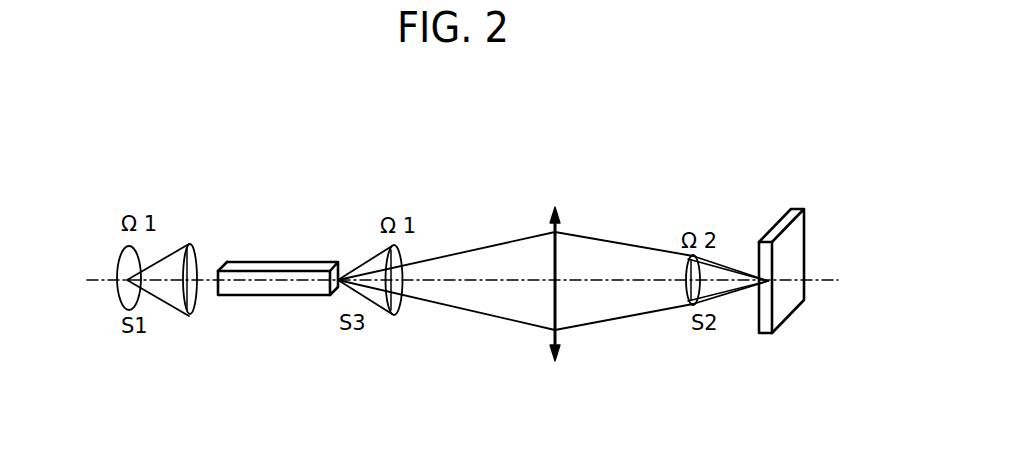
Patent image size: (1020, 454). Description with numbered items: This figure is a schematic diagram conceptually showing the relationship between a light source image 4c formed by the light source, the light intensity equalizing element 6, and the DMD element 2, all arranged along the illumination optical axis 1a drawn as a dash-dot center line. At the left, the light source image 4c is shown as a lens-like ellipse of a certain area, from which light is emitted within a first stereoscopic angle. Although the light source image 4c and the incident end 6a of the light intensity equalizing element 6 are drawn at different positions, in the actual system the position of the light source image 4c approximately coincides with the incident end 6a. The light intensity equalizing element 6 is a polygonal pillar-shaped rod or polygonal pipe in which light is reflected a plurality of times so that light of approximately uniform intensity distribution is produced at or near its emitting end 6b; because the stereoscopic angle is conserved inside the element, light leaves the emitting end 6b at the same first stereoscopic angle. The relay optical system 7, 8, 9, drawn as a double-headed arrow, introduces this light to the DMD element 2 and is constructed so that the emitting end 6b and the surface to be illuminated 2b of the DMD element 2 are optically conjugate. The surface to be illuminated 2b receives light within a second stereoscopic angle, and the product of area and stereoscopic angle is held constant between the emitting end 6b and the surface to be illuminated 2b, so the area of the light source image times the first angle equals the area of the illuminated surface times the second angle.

The illumination optical axis 1a is at (824, 277).
The DMD element 2 is at (770, 283).
The surface to be illuminated 2b is at (755, 263).
The light source image 4c is at (119, 287).
The light intensity equalizing element 6 is at (279, 303).
The incident end 6a is at (218, 270).
The emitting end 6b is at (327, 263).
The relay optical system 7 is at (568, 247).
The relay lens 8 is at (568, 247).
The relay lens 9 is at (558, 226).